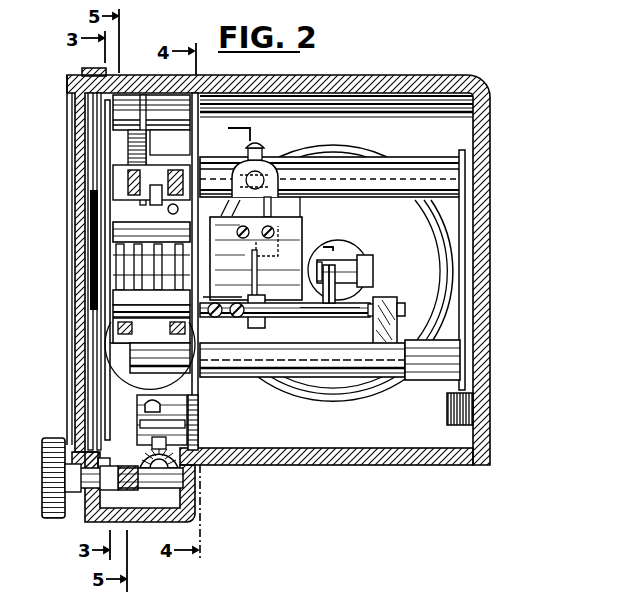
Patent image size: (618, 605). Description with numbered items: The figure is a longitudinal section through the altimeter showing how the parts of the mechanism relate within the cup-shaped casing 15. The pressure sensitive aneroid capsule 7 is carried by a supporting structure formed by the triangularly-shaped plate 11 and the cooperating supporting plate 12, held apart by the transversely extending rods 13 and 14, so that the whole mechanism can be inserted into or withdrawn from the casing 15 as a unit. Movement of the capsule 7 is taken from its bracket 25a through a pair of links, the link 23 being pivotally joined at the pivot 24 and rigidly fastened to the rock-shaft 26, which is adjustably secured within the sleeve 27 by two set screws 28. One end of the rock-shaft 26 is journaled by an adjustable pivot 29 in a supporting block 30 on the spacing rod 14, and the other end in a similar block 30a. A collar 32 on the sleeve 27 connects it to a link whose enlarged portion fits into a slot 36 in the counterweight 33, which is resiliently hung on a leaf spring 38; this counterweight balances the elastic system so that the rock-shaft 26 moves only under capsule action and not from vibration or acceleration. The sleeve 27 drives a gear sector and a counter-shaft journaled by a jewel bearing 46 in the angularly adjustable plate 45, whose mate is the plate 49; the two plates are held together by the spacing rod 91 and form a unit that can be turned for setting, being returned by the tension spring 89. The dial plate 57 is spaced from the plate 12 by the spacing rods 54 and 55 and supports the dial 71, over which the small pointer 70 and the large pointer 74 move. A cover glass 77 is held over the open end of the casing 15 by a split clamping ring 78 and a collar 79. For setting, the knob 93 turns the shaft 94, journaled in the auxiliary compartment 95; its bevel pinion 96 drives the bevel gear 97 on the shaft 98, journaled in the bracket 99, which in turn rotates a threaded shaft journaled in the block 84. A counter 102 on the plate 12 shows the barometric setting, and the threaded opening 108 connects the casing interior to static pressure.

The aneroid capsule 7 is at (414, 247).
The triangularly-shaped plate 11 is at (465, 176).
The supporting plate 12 is at (197, 149).
The spacing rod 13 is at (407, 158).
The spacing rod 14 is at (249, 378).
The casing 15 is at (383, 76).
The link 23 is at (328, 280).
The pivot 24 is at (335, 277).
The bracket 25a is at (360, 247).
The rock-shaft 26 is at (348, 317).
The sleeve 27 is at (238, 298).
The set screws 28 is at (236, 318).
The adjustable pivot 29 is at (397, 302).
The supporting block 30 is at (390, 326).
The supporting block 30a is at (113, 343).
The collar 32 is at (259, 294).
The counterweight 33 is at (302, 234).
The slot 36 is at (250, 265).
The leaf spring 38 is at (271, 211).
The angularly adjustable plate 45 is at (186, 141).
The jewel bearing 46 is at (181, 205).
The angularly adjustable plate 49 is at (118, 151).
The spacing rod 54 is at (151, 256).
The spacing rod 55 is at (147, 334).
The dial plate 57 is at (107, 317).
The small pointer 70 is at (97, 193).
The dial 71 is at (100, 363).
The large pointer 74 is at (92, 144).
The cover glass 77 is at (76, 380).
The split clamping ring 78 is at (74, 452).
The collar 79 is at (100, 450).
The block 84 is at (180, 181).
The tension spring 89 is at (146, 142).
The spacing rod 91 is at (126, 115).
The knob 93 is at (46, 490).
The shaft 94 is at (150, 487).
The auxiliary compartment 95 is at (201, 521).
The bevel pinion 96 is at (136, 490).
The bevel gear 97 is at (158, 443).
The shaft 98 is at (199, 409).
The bracket 99 is at (142, 428).
The counter 102 is at (144, 404).
The threaded opening 108 is at (490, 411).